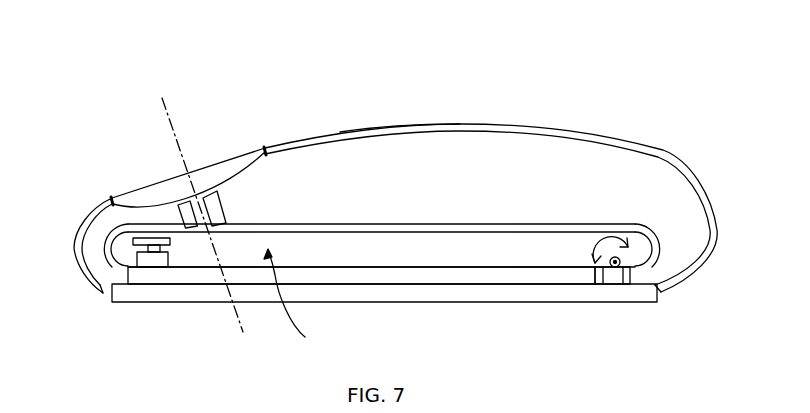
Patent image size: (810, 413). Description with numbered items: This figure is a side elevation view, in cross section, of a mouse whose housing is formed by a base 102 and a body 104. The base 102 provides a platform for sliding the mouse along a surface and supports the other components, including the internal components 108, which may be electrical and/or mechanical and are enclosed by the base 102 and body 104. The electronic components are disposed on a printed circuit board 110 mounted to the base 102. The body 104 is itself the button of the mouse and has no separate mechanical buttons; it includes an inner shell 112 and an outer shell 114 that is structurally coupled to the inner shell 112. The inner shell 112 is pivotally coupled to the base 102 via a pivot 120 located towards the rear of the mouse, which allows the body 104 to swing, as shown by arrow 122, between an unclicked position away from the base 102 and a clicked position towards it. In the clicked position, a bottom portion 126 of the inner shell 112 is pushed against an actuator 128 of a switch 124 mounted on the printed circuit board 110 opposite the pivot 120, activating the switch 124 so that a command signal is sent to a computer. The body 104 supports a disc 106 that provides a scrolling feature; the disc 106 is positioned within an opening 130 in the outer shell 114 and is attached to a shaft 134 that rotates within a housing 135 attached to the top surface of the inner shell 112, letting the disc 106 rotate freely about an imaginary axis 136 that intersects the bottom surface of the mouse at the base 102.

The base 102 is at (185, 292).
The body 104 is at (677, 158).
The disc 106 is at (138, 190).
The internal components 108 is at (305, 302).
The printed circuit board 110 is at (425, 260).
The inner shell 112 is at (348, 230).
The outer shell 114 is at (453, 130).
The pivot 120 is at (615, 262).
The arrow 122 is at (613, 240).
The switch 124 is at (143, 260).
The bottom portion 126 is at (140, 225).
The actuator 128 is at (140, 245).
The opening 130 is at (263, 147).
The shaft 134 is at (222, 210).
The housing 135 is at (224, 222).
The axis 136 is at (162, 98).